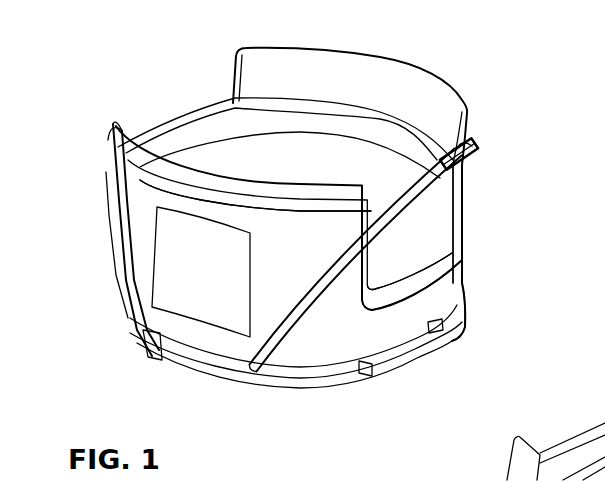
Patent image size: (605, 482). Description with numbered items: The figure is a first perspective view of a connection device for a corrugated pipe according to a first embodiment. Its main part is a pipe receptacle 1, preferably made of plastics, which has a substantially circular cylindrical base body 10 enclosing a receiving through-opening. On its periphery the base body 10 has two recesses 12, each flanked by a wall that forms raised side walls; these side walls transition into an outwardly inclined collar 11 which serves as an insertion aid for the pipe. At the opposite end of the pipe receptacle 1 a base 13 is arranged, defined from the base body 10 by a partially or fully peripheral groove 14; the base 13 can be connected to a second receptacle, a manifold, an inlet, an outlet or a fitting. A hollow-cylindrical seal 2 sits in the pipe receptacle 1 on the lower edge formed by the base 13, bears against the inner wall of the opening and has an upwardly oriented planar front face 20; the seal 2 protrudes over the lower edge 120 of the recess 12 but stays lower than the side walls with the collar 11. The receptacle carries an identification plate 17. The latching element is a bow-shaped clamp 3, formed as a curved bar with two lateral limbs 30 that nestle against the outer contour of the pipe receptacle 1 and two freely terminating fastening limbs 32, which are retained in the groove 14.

The pipe receptacle 1 is at (497, 82).
The seal 2 is at (418, 254).
The clamp 3 is at (97, 166).
The base body 10 is at (136, 280).
The collar 11 is at (126, 128).
The recess 12 is at (492, 231).
The base 13 is at (372, 375).
The groove 14 is at (431, 345).
The identification plate 17 is at (211, 301).
The front face 20 is at (279, 108).
The lateral limb 30 is at (112, 211).
The fastening limb 32 is at (158, 360).
The lower edge 120 is at (456, 262).